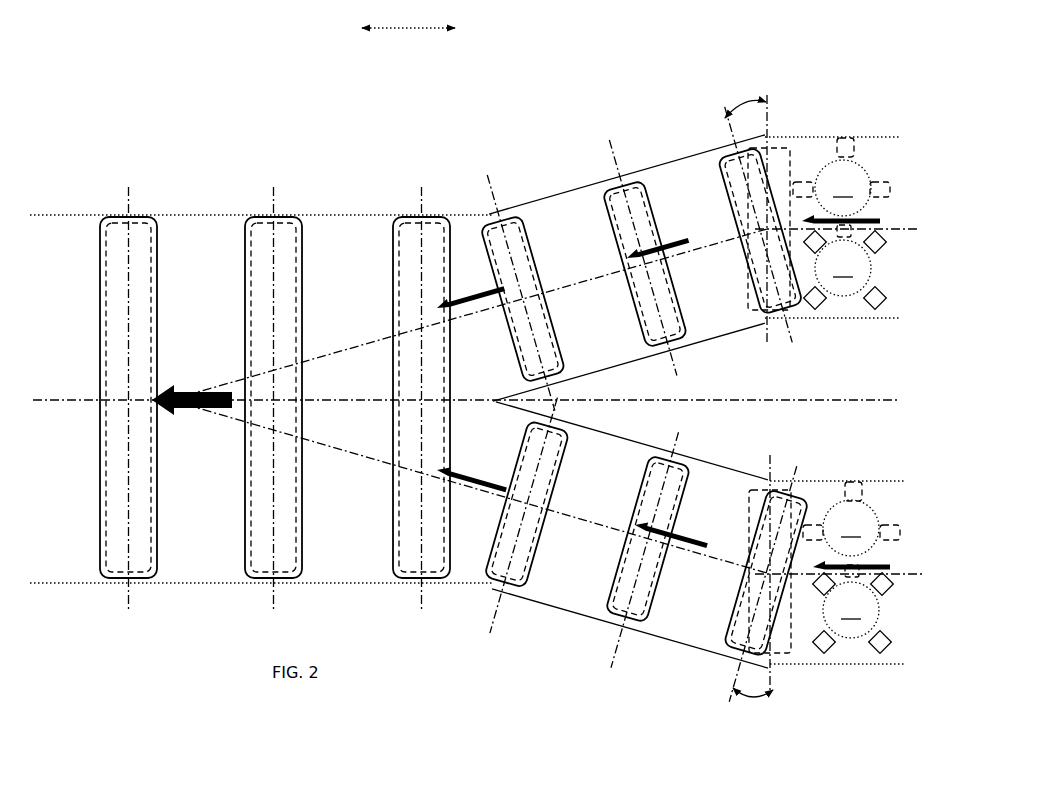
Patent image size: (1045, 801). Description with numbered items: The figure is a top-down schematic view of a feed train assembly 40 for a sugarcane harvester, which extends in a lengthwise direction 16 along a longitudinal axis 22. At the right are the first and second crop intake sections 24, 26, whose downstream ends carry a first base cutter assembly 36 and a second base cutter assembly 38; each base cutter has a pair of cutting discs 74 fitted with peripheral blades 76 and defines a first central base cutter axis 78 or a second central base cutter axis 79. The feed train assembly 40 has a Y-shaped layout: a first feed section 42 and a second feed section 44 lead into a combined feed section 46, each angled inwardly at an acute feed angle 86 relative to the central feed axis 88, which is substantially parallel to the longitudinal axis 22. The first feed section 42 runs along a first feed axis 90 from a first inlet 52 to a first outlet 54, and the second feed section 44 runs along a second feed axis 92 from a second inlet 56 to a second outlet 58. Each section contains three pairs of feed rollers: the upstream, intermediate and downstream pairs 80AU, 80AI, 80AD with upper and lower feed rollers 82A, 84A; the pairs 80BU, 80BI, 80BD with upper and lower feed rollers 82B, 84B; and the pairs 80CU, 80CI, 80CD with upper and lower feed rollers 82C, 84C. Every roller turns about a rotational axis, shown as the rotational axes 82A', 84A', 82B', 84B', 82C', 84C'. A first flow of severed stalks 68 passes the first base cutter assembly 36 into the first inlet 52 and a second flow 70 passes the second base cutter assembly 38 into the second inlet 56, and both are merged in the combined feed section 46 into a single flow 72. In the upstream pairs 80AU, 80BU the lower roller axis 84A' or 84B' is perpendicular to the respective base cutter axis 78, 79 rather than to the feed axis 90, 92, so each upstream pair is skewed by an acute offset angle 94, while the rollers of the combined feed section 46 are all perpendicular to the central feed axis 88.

The lengthwise direction 16 is at (415, 30).
The longitudinal axis 22 is at (850, 396).
The first crop intake section 24 is at (880, 105).
The second crop intake section 26 is at (890, 462).
The first base cutter assembly 36 is at (892, 172).
The second base cutter assembly 38 is at (905, 517).
The feed train assembly 40 is at (285, 98).
The first feed section 42 is at (640, 118).
The second feed section 44 is at (680, 658).
The combined feed section 46 is at (222, 212).
The first inlet 52 is at (790, 142).
The first outlet 54 is at (472, 235).
The second inlet 56 is at (800, 658).
The second outlet 58 is at (455, 588).
The first flow of severed sugarcane stalks 68 is at (468, 310).
The second flow of severed sugarcane stalks 70 is at (468, 478).
The combined flow of stalks 72 is at (180, 410).
The cutting disc 74 is at (847, 399).
The blade 76 is at (846, 138).
The first central base cutter axis 78 is at (900, 238).
The second central base cutter axis 79 is at (912, 582).
The downstream pair of feed rollers of the first feed section 80AD is at (578, 343).
The intermediate pair of feed rollers of the first feed section 80AI is at (637, 340).
The upstream pair of feed rollers of the first feed section 80AU is at (738, 306).
The downstream pair of feed rollers of the second feed section 80BD is at (542, 585).
The intermediate pair of feed rollers of the second feed section 80BI is at (604, 590).
The upstream pair of feed rollers of the second feed section 80BU is at (748, 485).
The downstream pair of feed rollers of the combined feed section 80CD is at (80, 500).
The intermediate pair of feed rollers of the combined feed section 80CI is at (234, 500).
The upstream pair of feed rollers of the combined feed section 80CU is at (382, 515).
The upper feed roller of the first feed section 82A is at (641, 264).
The rotational axis of upper feed roller of the first feed section 82A' is at (621, 204).
The upper feed roller of the second feed section 82B is at (646, 539).
The rotational axis of upper feed roller of the second feed section 82B' is at (615, 602).
The upper feed roller of the combined feed section 82C is at (241, 397).
The rotational axis of upper feed roller of the combined feed section 82C' is at (196, 178).
The lower feed roller of the first feed section 84A is at (630, 267).
The rotational axis of lower feed roller of the first feed section 84A' is at (790, 200).
The lower feed roller of the second feed section 84B is at (634, 531).
The rotational axis of lower feed roller of the second feed section 84B' is at (795, 599).
The lower feed roller of the combined feed section 84C is at (239, 397).
The rotational axis of lower feed roller of the combined feed section 84C' is at (396, 175).
The feed angle 86 is at (326, 355).
The central feed axis 88 is at (488, 383).
The first feed axis 90 is at (572, 283).
The second feed axis 92 is at (580, 515).
The offset angle 94 is at (745, 100).